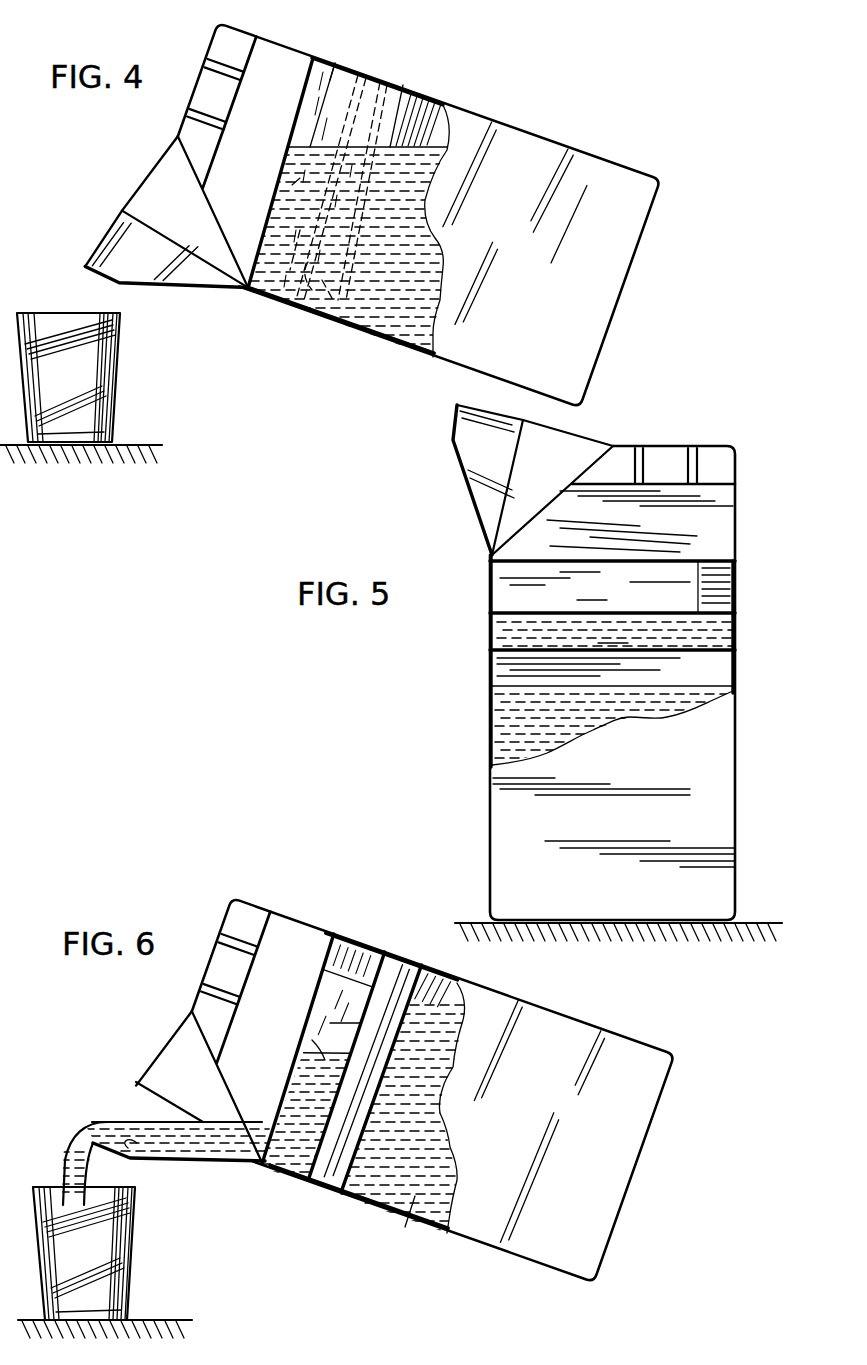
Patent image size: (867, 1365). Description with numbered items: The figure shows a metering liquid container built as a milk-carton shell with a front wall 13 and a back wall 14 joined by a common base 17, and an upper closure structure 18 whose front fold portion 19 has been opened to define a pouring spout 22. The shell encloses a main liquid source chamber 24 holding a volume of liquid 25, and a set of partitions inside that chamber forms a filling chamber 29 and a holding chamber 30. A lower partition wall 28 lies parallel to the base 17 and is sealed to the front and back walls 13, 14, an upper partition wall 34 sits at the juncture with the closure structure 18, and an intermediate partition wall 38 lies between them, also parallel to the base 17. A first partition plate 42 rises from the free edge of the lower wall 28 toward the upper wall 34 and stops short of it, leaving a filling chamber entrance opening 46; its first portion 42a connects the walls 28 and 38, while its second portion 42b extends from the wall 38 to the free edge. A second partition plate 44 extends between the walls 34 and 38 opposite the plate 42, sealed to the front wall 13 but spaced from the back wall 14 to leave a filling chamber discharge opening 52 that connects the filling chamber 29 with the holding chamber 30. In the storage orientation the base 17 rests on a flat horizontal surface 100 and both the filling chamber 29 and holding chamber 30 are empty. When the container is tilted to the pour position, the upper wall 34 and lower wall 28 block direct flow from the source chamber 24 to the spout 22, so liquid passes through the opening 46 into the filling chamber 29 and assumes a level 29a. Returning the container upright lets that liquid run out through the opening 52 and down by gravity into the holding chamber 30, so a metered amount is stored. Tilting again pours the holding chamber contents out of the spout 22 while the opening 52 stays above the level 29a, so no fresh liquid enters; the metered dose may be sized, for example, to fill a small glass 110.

In FIG. 4, the front wall 13 is at (392, 344).
In FIG. 5, the front wall 13 is at (492, 690).
In FIG. 6, the front wall 13 is at (393, 1208).
In FIG. 4, the back wall 14 is at (442, 104).
In FIG. 5, the back wall 14 is at (733, 673).
In FIG. 6, the back wall 14 is at (420, 970).
In FIG. 4, the base 17 is at (632, 274).
In FIG. 5, the base 17 is at (715, 940).
In FIG. 6, the base 17 is at (647, 1138).
In FIG. 5, the upper closure structure 18 is at (690, 443).
In FIG. 6, the upper closure structure 18 is at (234, 1026).
In FIG. 5, the front fold portion 19 is at (470, 497).
In FIG. 4, the pouring spout 22 is at (108, 272).
In FIG. 5, the pouring spout 22 is at (460, 418).
In FIG. 6, the pouring spout 22 is at (140, 1144).
In FIG. 5, the main liquid source chamber 24 is at (517, 673).
In FIG. 5, the liquid 25 is at (517, 722).
In FIG. 6, the liquid 25 is at (417, 1226).
In FIG. 4, the lower partition wall 28 is at (338, 332).
In FIG. 5, the lower partition wall 28 is at (657, 652).
In FIG. 6, the lower partition wall 28 is at (415, 1008).
In FIG. 4, the filling chamber 29 is at (268, 303).
In FIG. 5, the filling chamber 29 is at (595, 587).
In FIG. 6, the filling chamber 29 is at (312, 1078).
In FIG. 4, the liquid level 29a is at (278, 190).
In FIG. 6, the liquid level 29a is at (312, 1040).
In FIG. 4, the holding chamber 30 is at (309, 327).
In FIG. 5, the holding chamber 30 is at (614, 632).
In FIG. 6, the holding chamber 30 is at (410, 960).
In FIG. 4, the upper partition wall 34 is at (310, 128).
In FIG. 5, the upper partition wall 34 is at (682, 557).
In FIG. 6, the upper partition wall 34 is at (322, 1012).
In FIG. 4, the intermediate partition wall 38 is at (302, 314).
In FIG. 5, the intermediate partition wall 38 is at (712, 611).
In FIG. 6, the intermediate partition wall 38 is at (384, 958).
In FIG. 4, the first partition plate 42 is at (380, 94).
In FIG. 4, the first portion of first partition plate 42a is at (398, 100).
In FIG. 4, the second portion of first partition plate 42b is at (350, 78).
In FIG. 5, the second partition plate 44 is at (518, 590).
In FIG. 4, the filling chamber entrance opening 46 is at (312, 100).
In FIG. 4, the filling chamber discharge opening 52 is at (332, 62).
In FIG. 5, the filling chamber discharge opening 52 is at (716, 587).
In FIG. 6, the filling chamber discharge opening 52 is at (345, 958).
In FIG. 4, the flat horizontal surface 100 is at (150, 443).
In FIG. 5, the flat horizontal surface 100 is at (763, 924).
In FIG. 6, the flat horizontal surface 100 is at (165, 1320).
In FIG. 4, the small glass 110 is at (116, 383).
In FIG. 6, the small glass 110 is at (131, 1252).